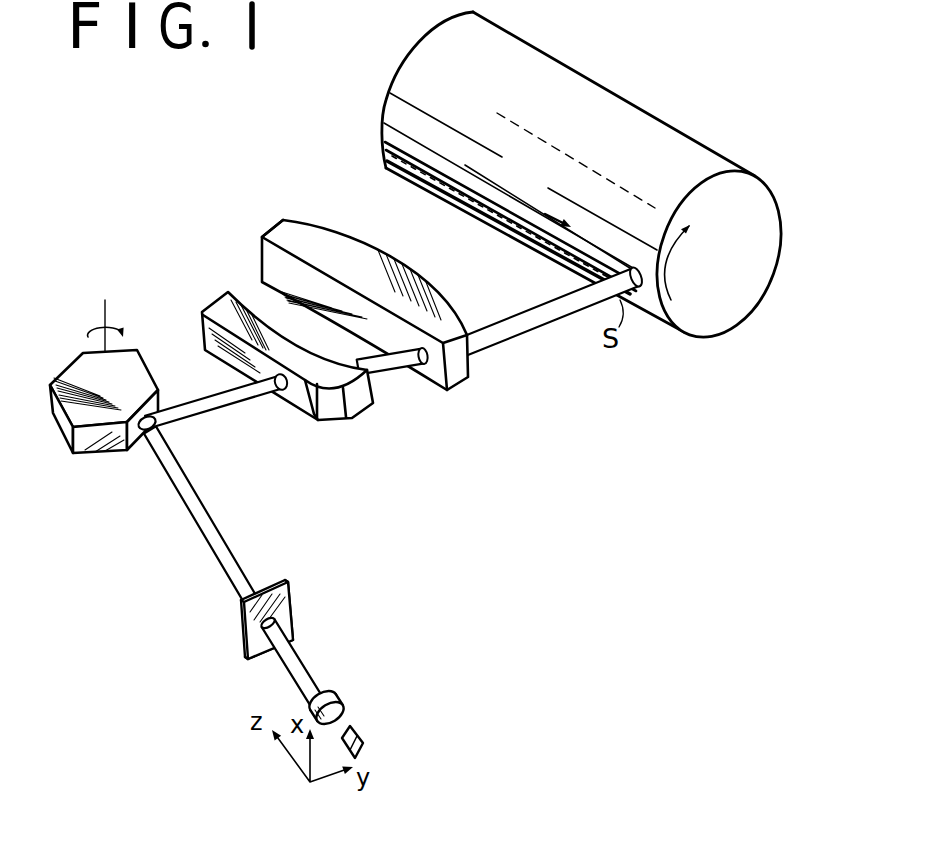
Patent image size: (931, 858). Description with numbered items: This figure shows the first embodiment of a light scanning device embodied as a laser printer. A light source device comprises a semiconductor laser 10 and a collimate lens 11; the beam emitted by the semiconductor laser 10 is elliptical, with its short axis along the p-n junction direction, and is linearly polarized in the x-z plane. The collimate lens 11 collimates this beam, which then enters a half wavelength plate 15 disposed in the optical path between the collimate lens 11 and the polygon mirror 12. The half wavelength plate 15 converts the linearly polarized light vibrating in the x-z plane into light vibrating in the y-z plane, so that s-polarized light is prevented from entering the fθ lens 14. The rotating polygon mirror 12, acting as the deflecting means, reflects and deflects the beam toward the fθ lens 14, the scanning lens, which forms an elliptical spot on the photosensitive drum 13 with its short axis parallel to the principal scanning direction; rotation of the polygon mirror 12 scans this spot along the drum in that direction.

The semiconductor laser 10 is at (361, 731).
The collimate lens 11 is at (330, 694).
The polygon mirror 12 is at (112, 455).
The photosensitive drum 13 is at (386, 136).
The fθ lens 14 is at (478, 386).
The half wavelength plate 15 is at (288, 604).